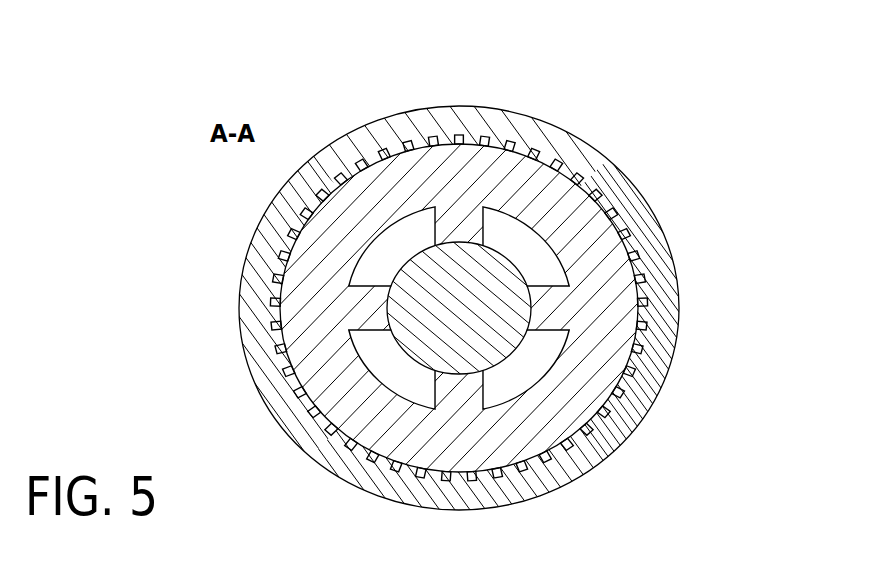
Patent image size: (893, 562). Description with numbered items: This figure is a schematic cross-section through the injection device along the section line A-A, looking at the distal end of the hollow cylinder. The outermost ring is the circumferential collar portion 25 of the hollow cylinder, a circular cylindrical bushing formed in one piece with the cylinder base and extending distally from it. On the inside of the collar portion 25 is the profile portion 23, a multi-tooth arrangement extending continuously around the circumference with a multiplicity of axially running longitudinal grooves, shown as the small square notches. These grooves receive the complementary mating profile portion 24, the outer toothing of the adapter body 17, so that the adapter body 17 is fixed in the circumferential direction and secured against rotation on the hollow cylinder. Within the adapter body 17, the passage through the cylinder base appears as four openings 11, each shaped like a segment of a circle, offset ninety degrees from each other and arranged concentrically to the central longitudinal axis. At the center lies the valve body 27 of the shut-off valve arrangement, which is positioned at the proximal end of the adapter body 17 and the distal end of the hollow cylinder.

The openings 11 is at (512, 232).
The adapter body 17 is at (600, 318).
The profile portion 23 is at (603, 222).
The mating profile portion 24 is at (608, 188).
The collar portion 25 is at (657, 263).
The valve body 27 is at (468, 265).